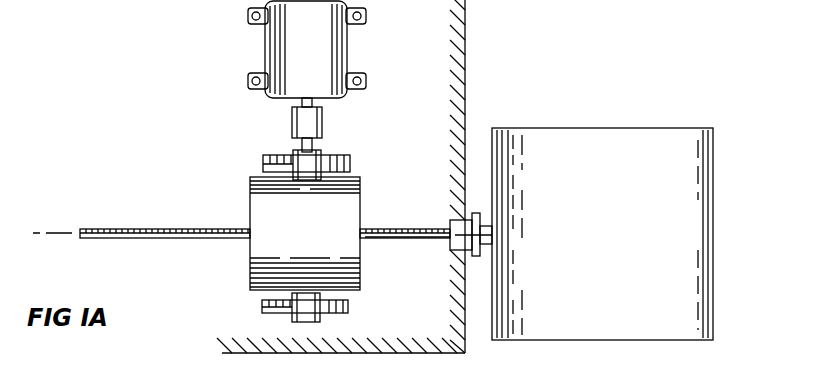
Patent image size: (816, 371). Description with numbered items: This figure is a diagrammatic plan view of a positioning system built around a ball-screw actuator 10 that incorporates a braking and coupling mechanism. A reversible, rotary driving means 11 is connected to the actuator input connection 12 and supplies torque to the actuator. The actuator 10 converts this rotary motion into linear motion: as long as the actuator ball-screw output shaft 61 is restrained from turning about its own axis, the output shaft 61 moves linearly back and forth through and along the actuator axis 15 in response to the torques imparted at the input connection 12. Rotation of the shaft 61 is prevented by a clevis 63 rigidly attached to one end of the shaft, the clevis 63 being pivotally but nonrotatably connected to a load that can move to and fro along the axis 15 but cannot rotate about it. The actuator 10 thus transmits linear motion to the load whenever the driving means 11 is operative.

The ball-screw actuator 10 is at (250, 272).
The reversible, rotary driving means 11 is at (348, 46).
The actuator input connection 12 is at (298, 143).
The actuator axis 15 is at (60, 230).
The actuator ball-screw output shaft 61 is at (385, 228).
The clevis 63 is at (455, 222).